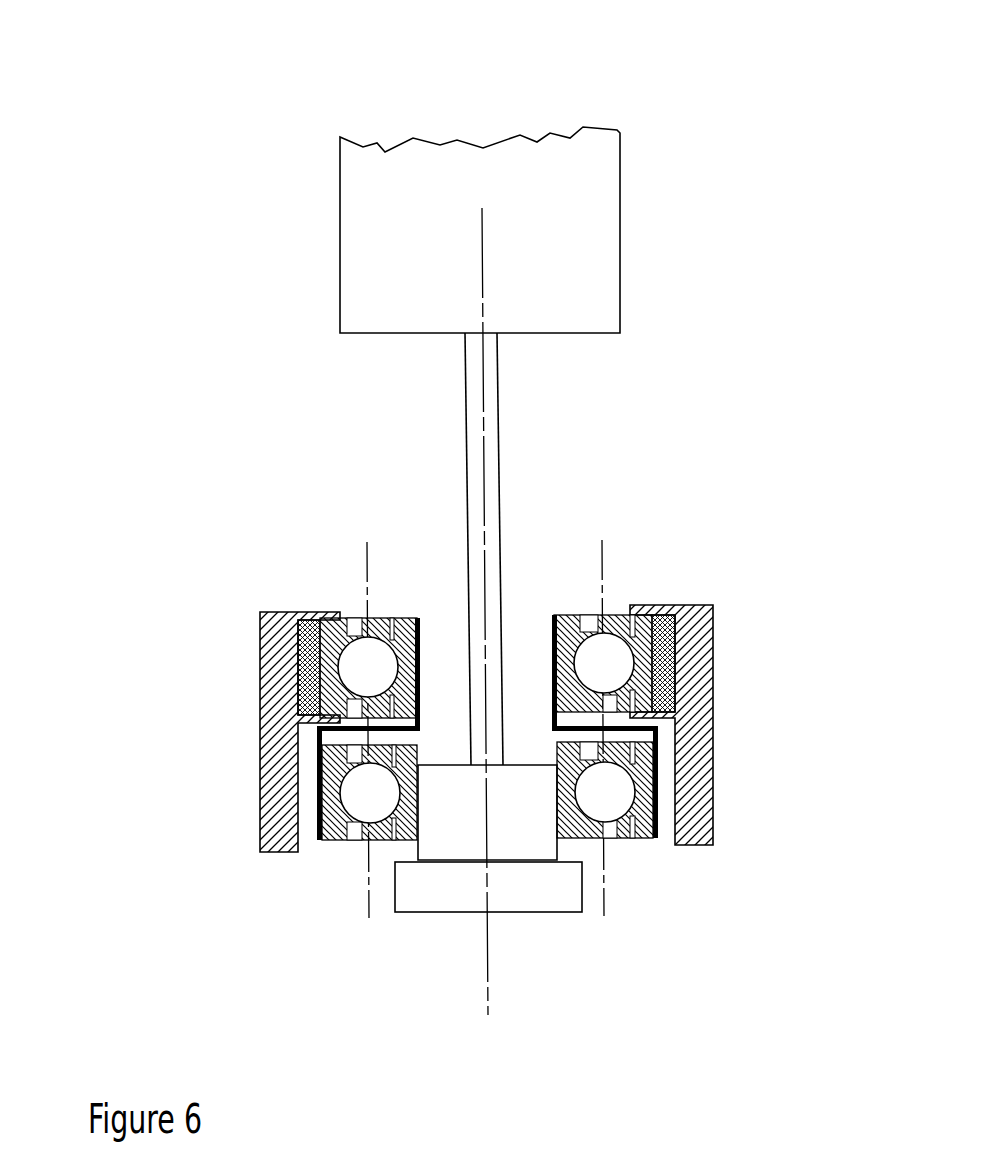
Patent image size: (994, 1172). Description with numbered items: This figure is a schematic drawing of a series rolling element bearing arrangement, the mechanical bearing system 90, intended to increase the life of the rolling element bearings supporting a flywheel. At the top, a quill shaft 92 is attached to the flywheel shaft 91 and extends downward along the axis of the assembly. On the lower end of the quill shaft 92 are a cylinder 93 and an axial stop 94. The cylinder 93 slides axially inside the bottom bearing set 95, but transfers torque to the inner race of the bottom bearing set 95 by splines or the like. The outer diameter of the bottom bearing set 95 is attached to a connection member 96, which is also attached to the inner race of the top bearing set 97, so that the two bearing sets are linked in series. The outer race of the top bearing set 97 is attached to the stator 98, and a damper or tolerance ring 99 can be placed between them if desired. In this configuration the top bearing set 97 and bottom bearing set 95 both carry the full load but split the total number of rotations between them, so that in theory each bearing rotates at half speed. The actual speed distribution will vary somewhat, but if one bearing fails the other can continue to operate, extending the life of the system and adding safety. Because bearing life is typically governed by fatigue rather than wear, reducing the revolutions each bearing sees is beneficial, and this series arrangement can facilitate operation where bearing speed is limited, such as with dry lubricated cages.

The mechanical bearing system 90 is at (145, 62).
The flywheel shaft 91 is at (337, 200).
The quill shaft 92 is at (503, 373).
The cylinder 93 is at (563, 848).
The axial stop 94 is at (430, 912).
The bottom bearing set 95 is at (380, 844).
The connection member 96 is at (313, 772).
The top bearing set 97 is at (360, 617).
The stator 98 is at (259, 817).
The damper or tolerance ring 99 is at (681, 656).